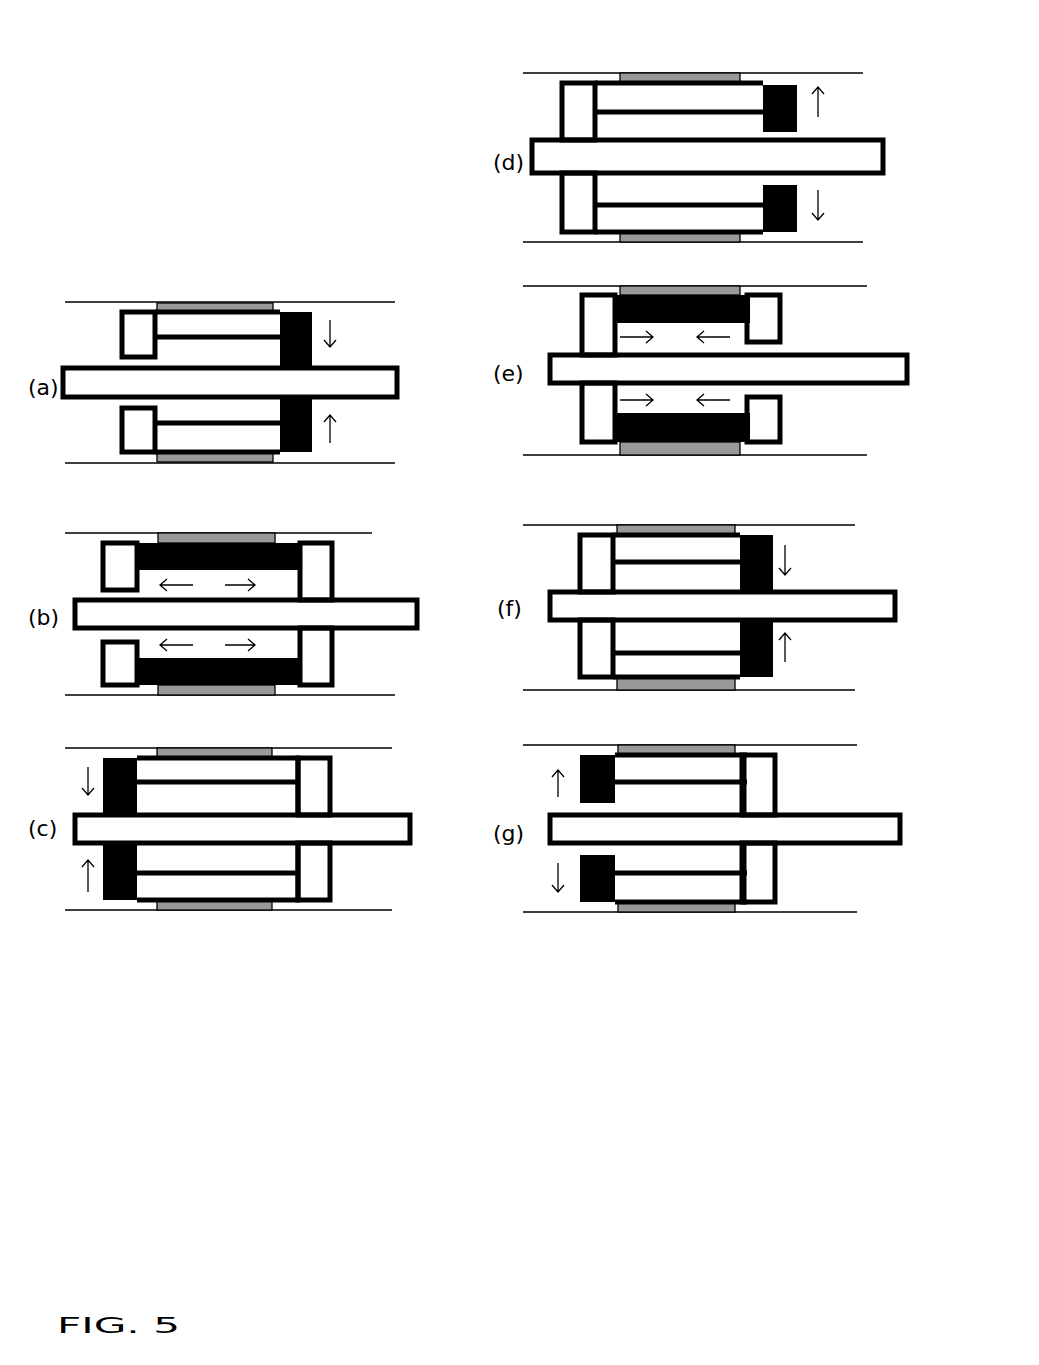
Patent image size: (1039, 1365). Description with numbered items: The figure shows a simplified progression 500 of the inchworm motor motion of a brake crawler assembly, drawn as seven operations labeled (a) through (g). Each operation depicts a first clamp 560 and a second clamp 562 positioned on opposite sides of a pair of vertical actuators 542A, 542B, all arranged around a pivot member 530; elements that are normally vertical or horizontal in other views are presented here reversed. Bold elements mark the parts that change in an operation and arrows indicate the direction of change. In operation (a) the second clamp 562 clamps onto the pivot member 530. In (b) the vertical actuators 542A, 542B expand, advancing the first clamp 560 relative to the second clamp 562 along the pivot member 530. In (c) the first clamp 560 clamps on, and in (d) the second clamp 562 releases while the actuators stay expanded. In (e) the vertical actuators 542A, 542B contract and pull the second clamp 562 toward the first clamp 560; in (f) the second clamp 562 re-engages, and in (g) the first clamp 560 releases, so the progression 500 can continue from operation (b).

The progression 500 is at (195, 80).
The pivot member 530 is at (372, 385).
The vertical actuator 542A is at (197, 325).
The vertical actuator 542B is at (212, 441).
The first clamp 560 is at (143, 322).
The second clamp 562 is at (312, 312).